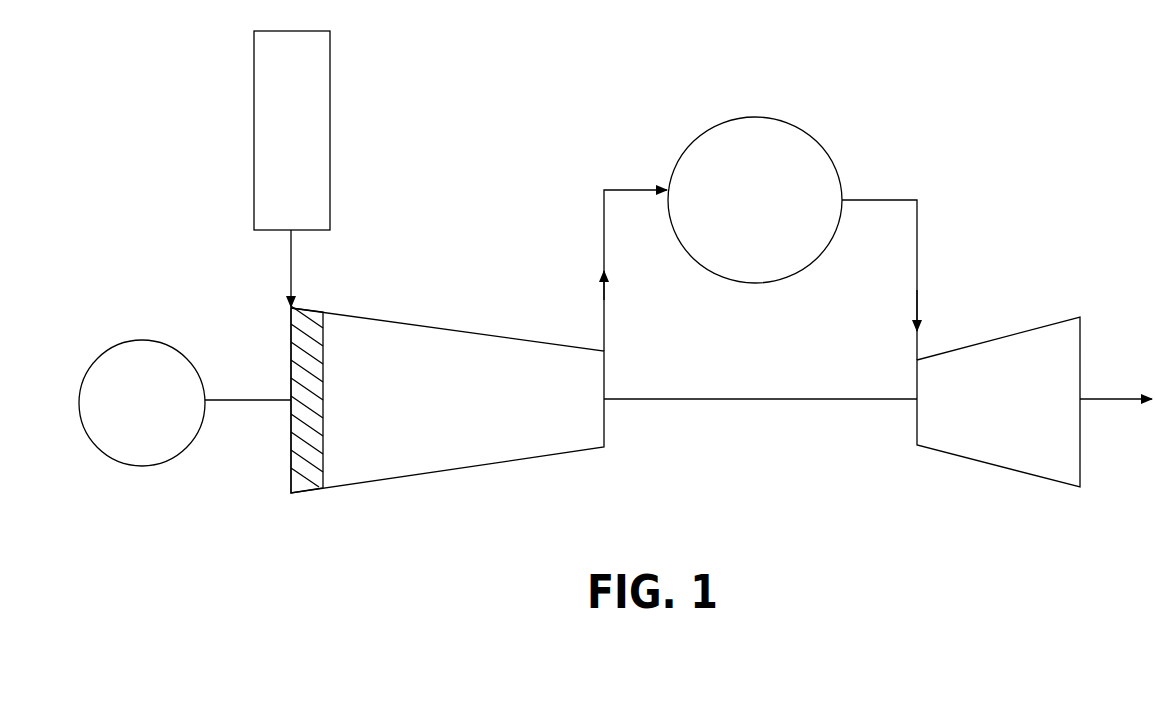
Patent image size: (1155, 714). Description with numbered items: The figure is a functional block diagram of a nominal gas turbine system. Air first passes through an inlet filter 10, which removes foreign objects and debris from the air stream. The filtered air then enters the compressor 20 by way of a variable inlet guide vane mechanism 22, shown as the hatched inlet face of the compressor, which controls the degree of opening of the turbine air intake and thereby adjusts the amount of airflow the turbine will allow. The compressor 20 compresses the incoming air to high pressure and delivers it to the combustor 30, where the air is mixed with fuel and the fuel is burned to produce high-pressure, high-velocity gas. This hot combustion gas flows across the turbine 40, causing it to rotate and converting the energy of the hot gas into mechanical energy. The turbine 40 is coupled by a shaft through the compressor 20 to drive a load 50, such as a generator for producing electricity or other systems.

The inlet filter 10 is at (292, 130).
The compressor 20 is at (447, 400).
The variable inlet guide vane mechanism 22 is at (316, 327).
The combustor 30 is at (755, 200).
The gas turbine 40 is at (998, 402).
The load 50 is at (142, 403).